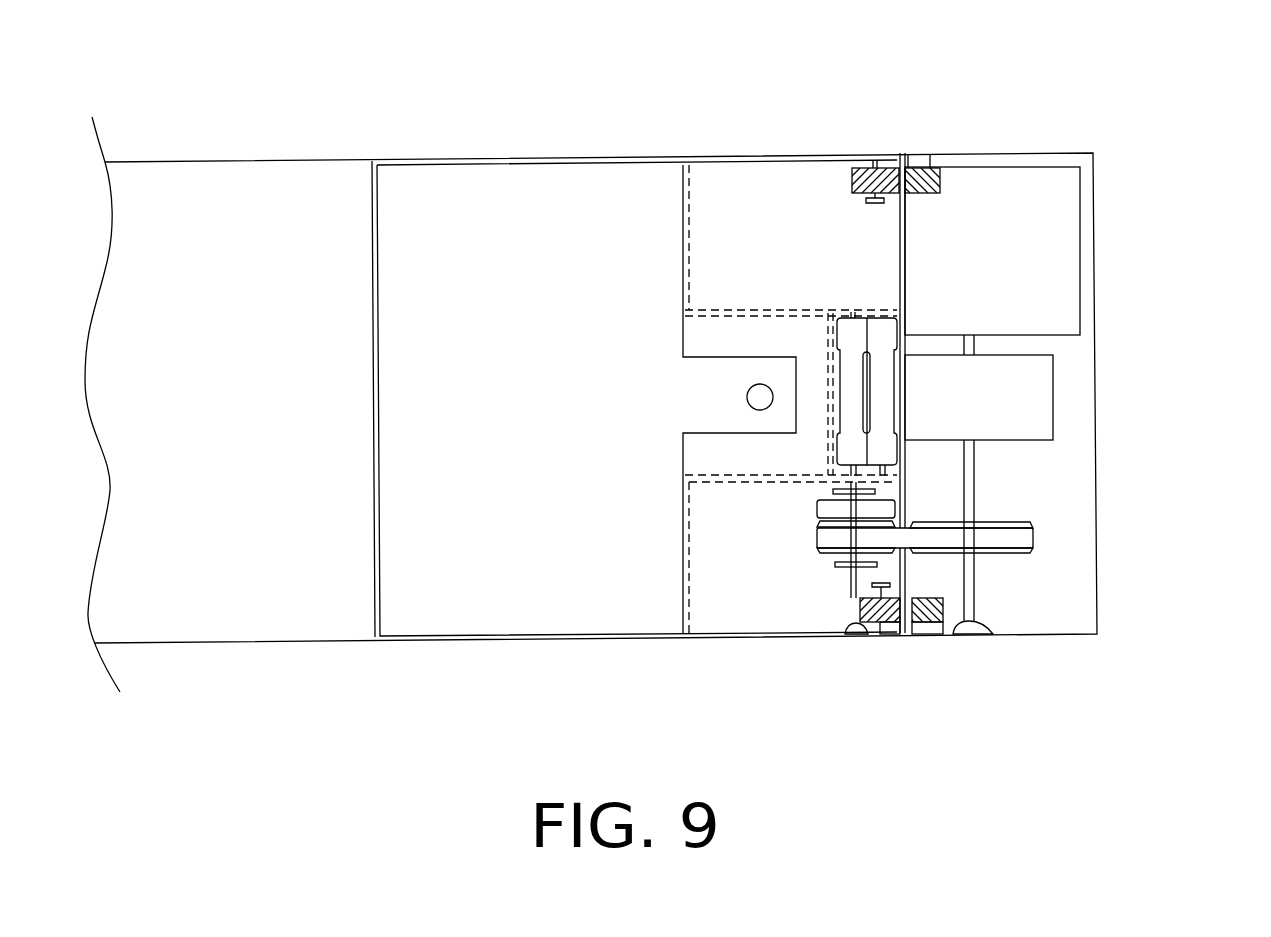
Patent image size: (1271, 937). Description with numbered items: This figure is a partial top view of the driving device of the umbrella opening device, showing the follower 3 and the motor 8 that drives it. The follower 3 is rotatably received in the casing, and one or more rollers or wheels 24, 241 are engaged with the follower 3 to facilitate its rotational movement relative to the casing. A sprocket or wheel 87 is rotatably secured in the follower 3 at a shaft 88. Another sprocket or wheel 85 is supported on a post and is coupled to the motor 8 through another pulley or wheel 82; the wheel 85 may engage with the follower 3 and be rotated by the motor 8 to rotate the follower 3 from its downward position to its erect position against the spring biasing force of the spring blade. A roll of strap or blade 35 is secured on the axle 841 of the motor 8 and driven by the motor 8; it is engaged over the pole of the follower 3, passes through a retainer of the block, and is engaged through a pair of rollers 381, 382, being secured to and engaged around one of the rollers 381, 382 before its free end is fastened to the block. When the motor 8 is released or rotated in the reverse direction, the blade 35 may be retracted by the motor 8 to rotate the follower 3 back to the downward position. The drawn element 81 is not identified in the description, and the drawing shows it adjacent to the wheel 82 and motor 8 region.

The follower 3 is at (907, 572).
The motor 8 is at (1050, 237).
The roller or wheel 24 is at (923, 168).
The roller or wheel 241 is at (865, 173).
The roll of strap or blade 35 is at (1023, 405).
The driven gear 81 is at (1033, 535).
The pulley or wheel 82 is at (1013, 520).
The sprocket or wheel 85 is at (832, 560).
The sprocket or wheel 87 is at (817, 509).
The shaft 88 is at (858, 612).
The roller 381 is at (887, 327).
The roller 382 is at (848, 328).
The axle 841 is at (977, 600).